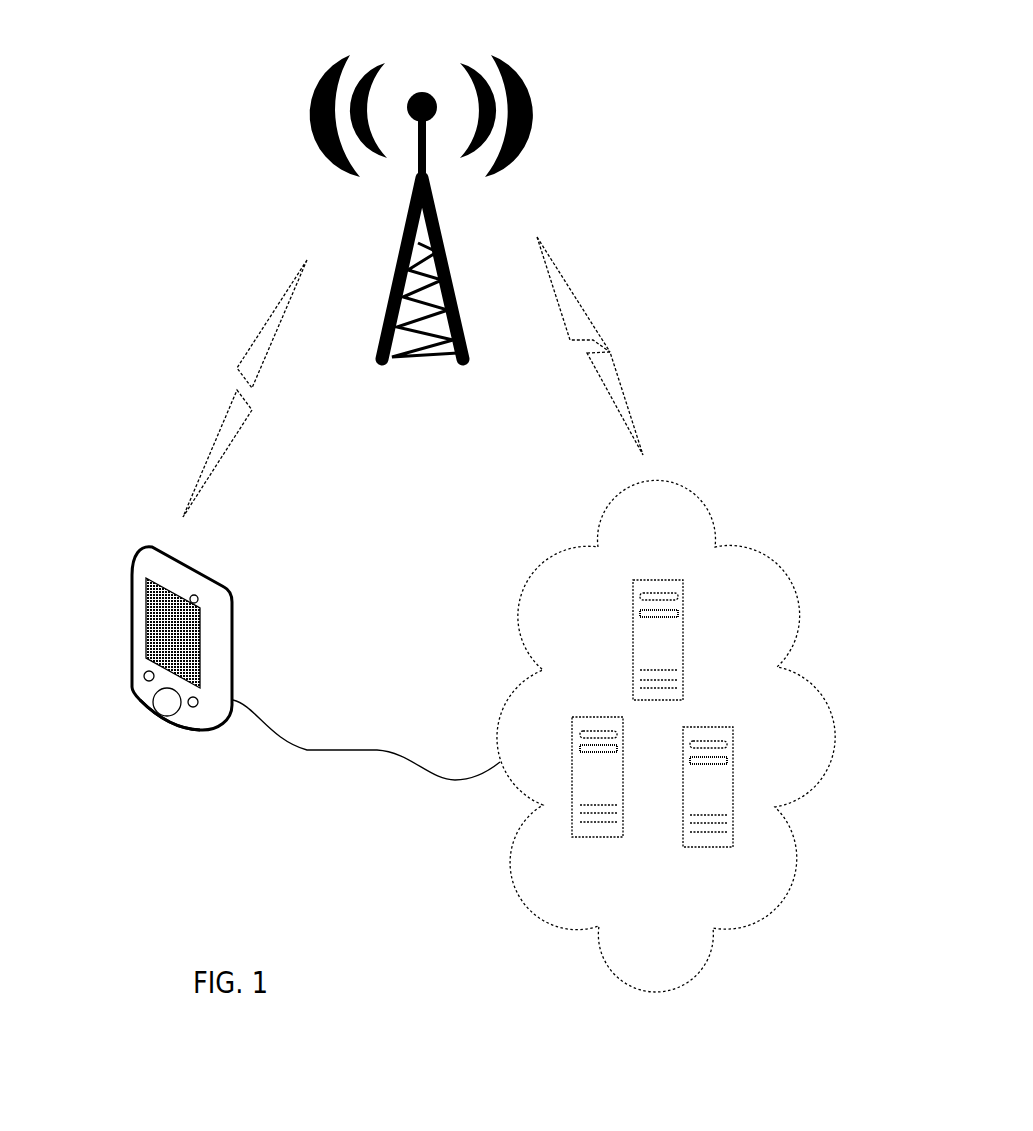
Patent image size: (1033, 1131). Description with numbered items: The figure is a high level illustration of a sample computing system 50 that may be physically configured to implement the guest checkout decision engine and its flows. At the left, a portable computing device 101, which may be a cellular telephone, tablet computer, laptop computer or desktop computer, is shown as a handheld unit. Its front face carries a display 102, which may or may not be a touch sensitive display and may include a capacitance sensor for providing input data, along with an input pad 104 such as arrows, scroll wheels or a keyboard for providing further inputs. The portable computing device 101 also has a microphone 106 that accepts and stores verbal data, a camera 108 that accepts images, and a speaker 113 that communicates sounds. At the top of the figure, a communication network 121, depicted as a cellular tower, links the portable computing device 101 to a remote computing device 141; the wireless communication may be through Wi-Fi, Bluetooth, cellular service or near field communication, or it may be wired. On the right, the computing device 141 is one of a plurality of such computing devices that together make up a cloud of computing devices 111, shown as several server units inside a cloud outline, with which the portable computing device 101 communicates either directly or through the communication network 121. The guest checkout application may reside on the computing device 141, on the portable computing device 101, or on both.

The computing system 50 is at (762, 100).
The communication network 121 is at (358, 228).
The portable computing device 101 is at (132, 573).
The display 102 is at (183, 652).
The camera 108 is at (197, 597).
The speaker 113 is at (143, 677).
The input pad 104 is at (168, 708).
The microphone 106 is at (160, 722).
The cloud of computing devices 111 is at (560, 922).
The computing device 141 is at (670, 640).